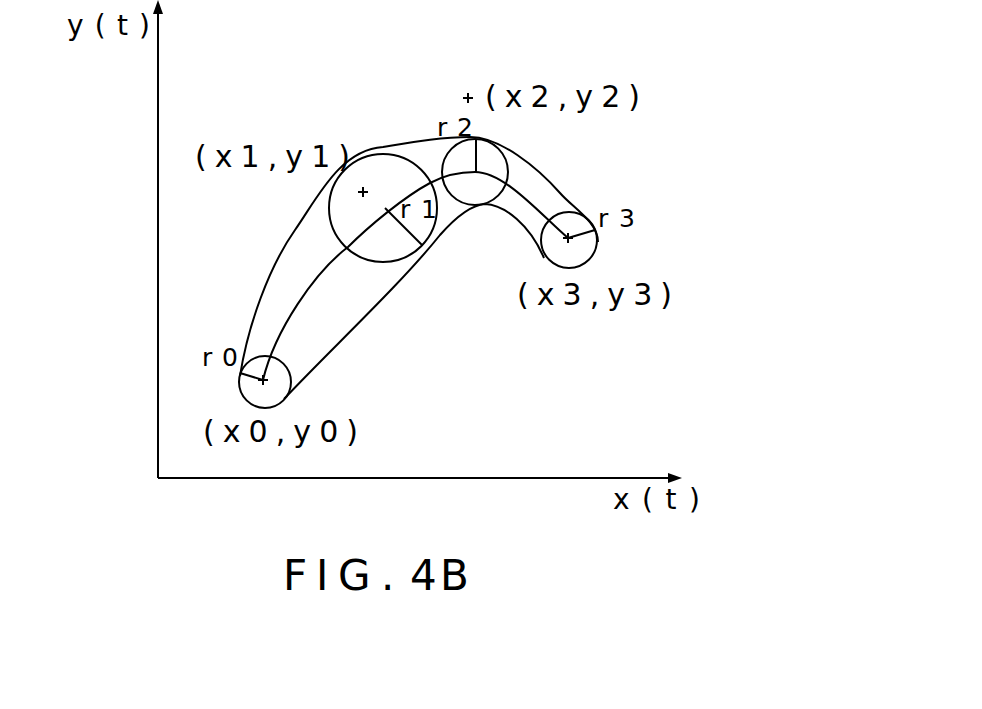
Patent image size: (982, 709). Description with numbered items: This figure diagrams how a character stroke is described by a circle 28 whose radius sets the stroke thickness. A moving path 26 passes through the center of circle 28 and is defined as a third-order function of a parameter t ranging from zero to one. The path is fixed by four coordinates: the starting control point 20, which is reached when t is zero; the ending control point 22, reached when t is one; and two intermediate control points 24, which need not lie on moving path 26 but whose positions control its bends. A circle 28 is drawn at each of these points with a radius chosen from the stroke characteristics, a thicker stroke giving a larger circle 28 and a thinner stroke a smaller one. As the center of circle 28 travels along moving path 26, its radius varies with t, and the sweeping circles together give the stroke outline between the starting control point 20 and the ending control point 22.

The starting control point 20 is at (264, 378).
The ending control point 22 is at (567, 236).
The control point 24 is at (365, 190).
The moving path 26 is at (340, 256).
The circle 28 is at (405, 158).